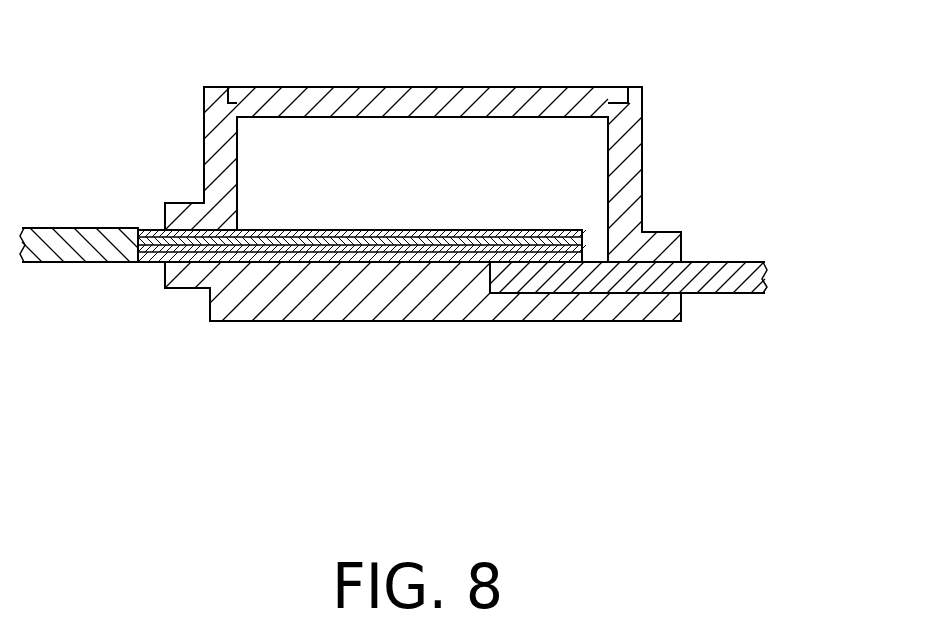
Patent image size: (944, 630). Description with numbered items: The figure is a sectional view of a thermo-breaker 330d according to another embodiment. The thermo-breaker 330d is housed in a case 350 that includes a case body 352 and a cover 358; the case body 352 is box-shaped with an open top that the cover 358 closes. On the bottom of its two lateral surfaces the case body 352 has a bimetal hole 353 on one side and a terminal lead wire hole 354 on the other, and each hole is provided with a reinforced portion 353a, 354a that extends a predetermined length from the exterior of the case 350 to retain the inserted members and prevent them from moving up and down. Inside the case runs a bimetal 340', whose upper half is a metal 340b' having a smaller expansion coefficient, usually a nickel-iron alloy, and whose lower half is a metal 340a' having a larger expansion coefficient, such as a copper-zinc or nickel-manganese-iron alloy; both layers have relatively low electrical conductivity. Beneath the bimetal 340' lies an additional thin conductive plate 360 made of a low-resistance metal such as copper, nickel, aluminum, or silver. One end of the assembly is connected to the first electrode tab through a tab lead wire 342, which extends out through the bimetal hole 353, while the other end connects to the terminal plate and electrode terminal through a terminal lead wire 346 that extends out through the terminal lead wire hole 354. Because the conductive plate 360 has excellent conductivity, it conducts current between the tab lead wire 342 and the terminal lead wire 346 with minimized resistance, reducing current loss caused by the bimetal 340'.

The thermo-breaker 330d is at (682, 90).
The case 350 is at (127, 9).
The case body 352 is at (212, 132).
The bimetal hole 353 is at (177, 226).
The reinforced portion 353a is at (187, 203).
The terminal lead wire hole 354 is at (667, 260).
The reinforced portion 354a is at (668, 232).
The cover 358 is at (253, 90).
The bimetal 340' is at (360, 334).
The metal having a larger expansion coefficient 340a' is at (362, 313).
The metal having a smaller expansion coefficient 340b' is at (358, 324).
The tab lead wire 342 is at (58, 253).
The terminal lead wire 346 is at (714, 293).
The conductive plate 360 is at (393, 263).